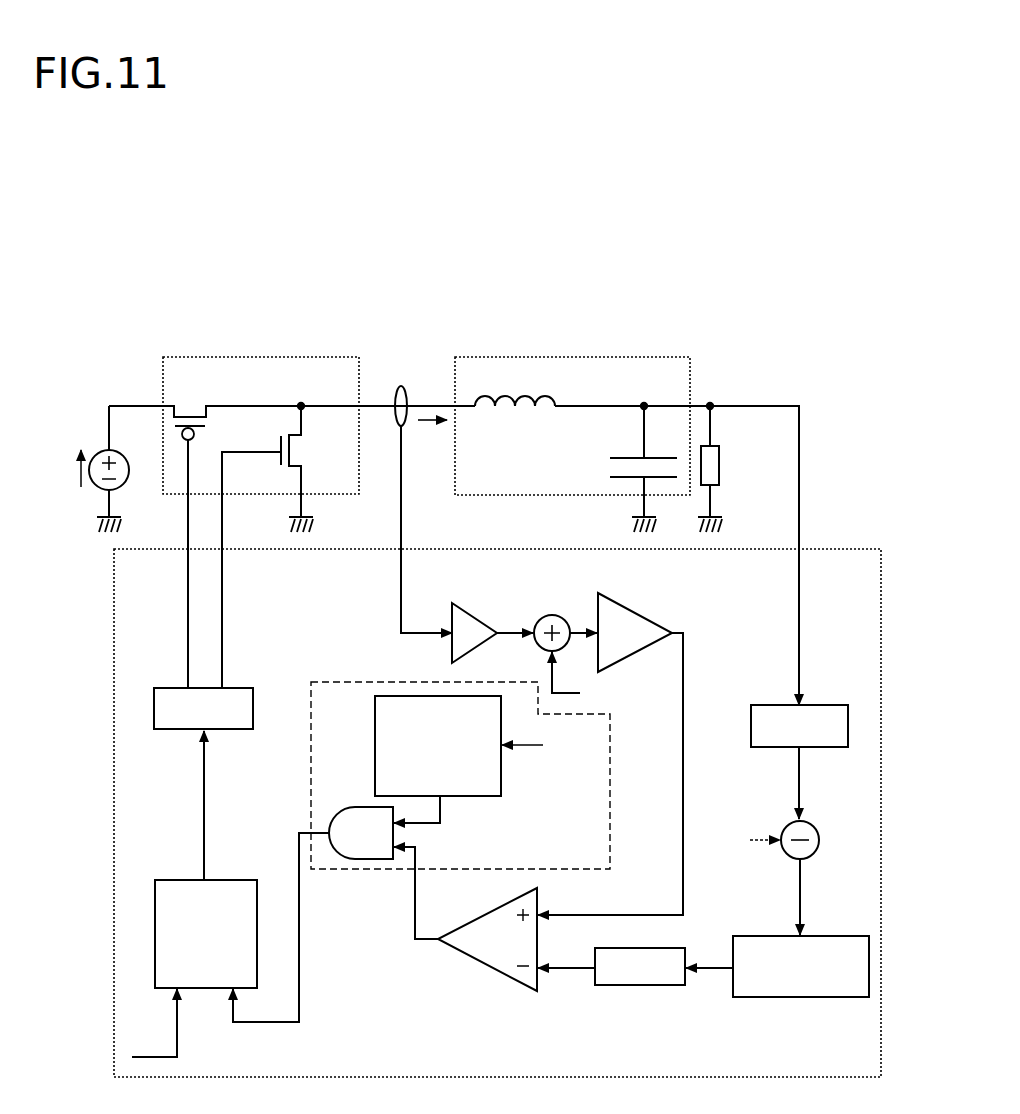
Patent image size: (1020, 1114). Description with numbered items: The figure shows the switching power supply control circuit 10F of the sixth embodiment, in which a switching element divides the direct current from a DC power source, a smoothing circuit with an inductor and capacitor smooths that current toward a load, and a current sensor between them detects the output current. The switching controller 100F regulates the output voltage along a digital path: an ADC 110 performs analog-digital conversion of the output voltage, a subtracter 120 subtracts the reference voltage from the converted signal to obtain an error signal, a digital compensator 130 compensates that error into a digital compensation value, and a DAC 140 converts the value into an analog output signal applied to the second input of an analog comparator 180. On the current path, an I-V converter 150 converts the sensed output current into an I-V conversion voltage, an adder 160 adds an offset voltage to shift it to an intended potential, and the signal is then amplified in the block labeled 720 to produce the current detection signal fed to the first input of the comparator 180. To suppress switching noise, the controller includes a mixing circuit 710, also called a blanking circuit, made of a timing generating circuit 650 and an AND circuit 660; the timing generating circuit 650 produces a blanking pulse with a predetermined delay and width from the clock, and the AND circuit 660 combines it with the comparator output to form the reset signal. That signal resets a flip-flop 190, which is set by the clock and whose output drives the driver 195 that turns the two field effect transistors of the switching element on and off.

The switching power supply control circuit 10F is at (512, 229).
The switching controller 100F is at (832, 548).
The ADC 110 is at (808, 705).
The subtracter 120 is at (781, 833).
The digital compensator 130 is at (763, 999).
The DAC 140 is at (623, 988).
The I-V converter 150 is at (452, 618).
The adder 160 is at (564, 621).
The analog comparator 180 is at (497, 971).
The flip-flop 190 is at (228, 880).
The driver 195 is at (243, 731).
The timing generating circuit 650 is at (375, 729).
The AND circuit 660 is at (355, 807).
The mixing circuit 710 is at (326, 682).
The programmable gain amplifier 720 is at (633, 616).